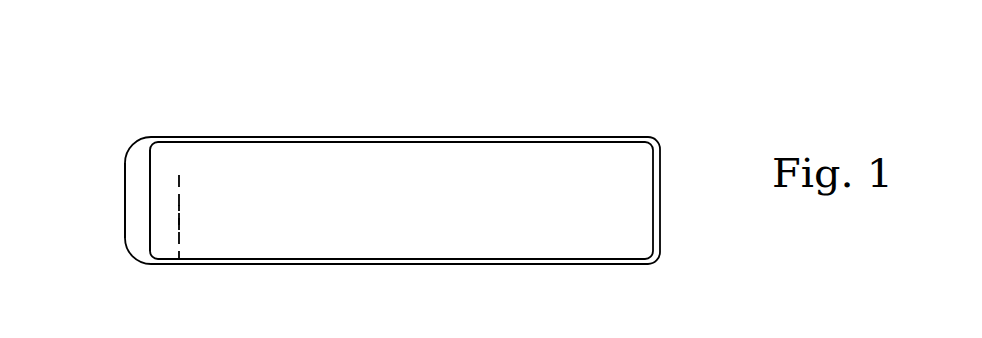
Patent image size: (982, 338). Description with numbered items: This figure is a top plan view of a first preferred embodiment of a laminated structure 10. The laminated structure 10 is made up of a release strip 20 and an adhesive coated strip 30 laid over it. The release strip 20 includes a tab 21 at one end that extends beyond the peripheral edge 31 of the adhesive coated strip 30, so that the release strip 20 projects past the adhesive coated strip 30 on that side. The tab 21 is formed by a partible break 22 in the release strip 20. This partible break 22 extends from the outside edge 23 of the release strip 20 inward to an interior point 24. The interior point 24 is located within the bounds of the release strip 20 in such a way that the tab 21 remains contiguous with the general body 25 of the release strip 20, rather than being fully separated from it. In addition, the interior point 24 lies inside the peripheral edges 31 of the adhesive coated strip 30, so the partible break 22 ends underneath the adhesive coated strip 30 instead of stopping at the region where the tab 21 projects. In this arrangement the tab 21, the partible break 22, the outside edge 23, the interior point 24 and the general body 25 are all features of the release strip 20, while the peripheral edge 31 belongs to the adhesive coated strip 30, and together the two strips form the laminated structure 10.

The laminated structure 10 is at (412, 74).
The release strip 20 is at (278, 136).
The tab 21 is at (125, 200).
The partible break 22 is at (180, 217).
The outside edge 23 is at (193, 265).
The interior point 24 is at (180, 175).
The general body 25 is at (540, 267).
The adhesive coated strip 30 is at (573, 141).
The peripheral edge 31 is at (150, 202).